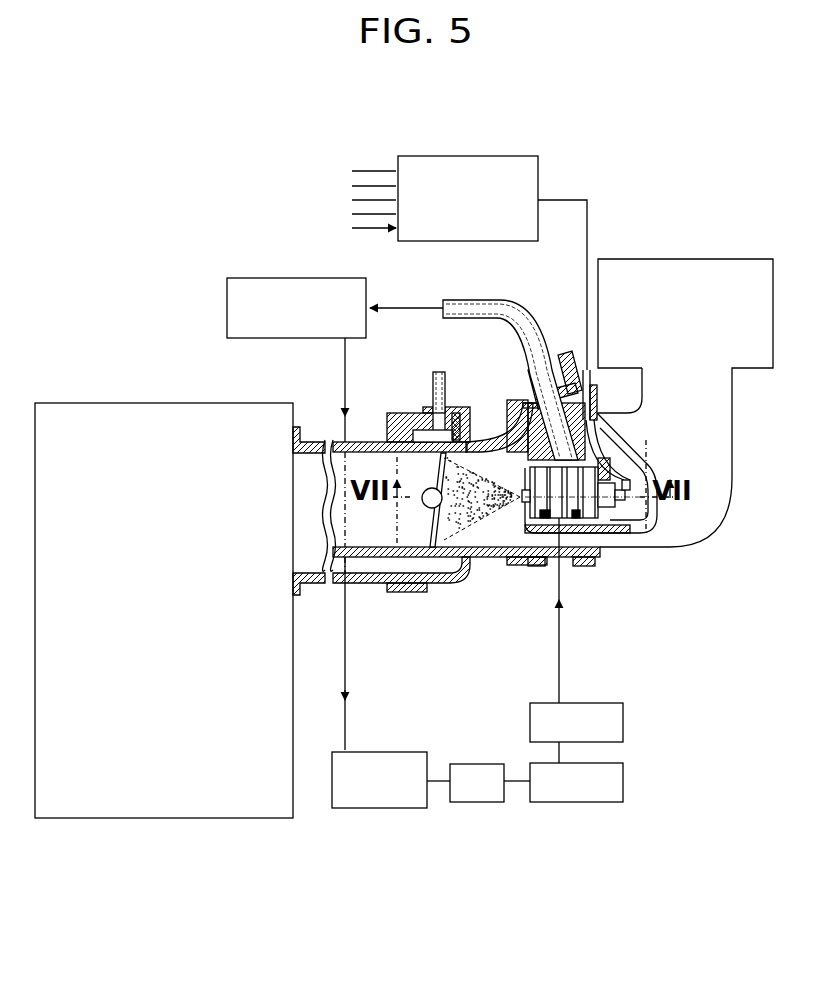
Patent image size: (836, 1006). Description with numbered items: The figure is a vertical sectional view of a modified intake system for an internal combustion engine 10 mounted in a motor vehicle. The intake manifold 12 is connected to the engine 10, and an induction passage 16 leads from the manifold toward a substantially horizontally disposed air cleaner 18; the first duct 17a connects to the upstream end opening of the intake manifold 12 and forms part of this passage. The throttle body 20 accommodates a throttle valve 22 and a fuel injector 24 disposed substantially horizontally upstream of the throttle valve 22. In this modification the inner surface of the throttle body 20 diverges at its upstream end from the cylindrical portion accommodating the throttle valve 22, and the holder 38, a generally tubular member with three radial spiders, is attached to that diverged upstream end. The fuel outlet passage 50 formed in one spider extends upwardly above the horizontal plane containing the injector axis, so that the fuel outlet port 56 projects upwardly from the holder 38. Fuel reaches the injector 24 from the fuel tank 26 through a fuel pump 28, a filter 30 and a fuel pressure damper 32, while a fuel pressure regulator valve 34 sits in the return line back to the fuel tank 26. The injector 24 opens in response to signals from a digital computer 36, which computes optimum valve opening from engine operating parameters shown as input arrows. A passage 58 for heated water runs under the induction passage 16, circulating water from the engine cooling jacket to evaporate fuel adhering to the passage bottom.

The internal combustion engine 10 is at (97, 403).
The intake manifold 12 is at (320, 578).
The induction passage 16 is at (390, 537).
The first duct 17a is at (370, 437).
The air cleaner 18 is at (727, 259).
The throttle body 20 is at (488, 412).
The throttle valve 22 is at (447, 530).
The fuel injector 24 is at (593, 537).
The fuel tank 26 is at (401, 752).
The fuel pump 28 is at (484, 764).
The filter 30 is at (623, 786).
The fuel pressure damper 32 is at (623, 726).
The fuel pressure regulator valve 34 is at (227, 308).
The digital computer 36 is at (492, 156).
The holder 38 is at (548, 536).
The fuel outlet passage 50 is at (567, 437).
The fuel outlet port 56 is at (537, 322).
The passage for heated water 58 is at (376, 578).